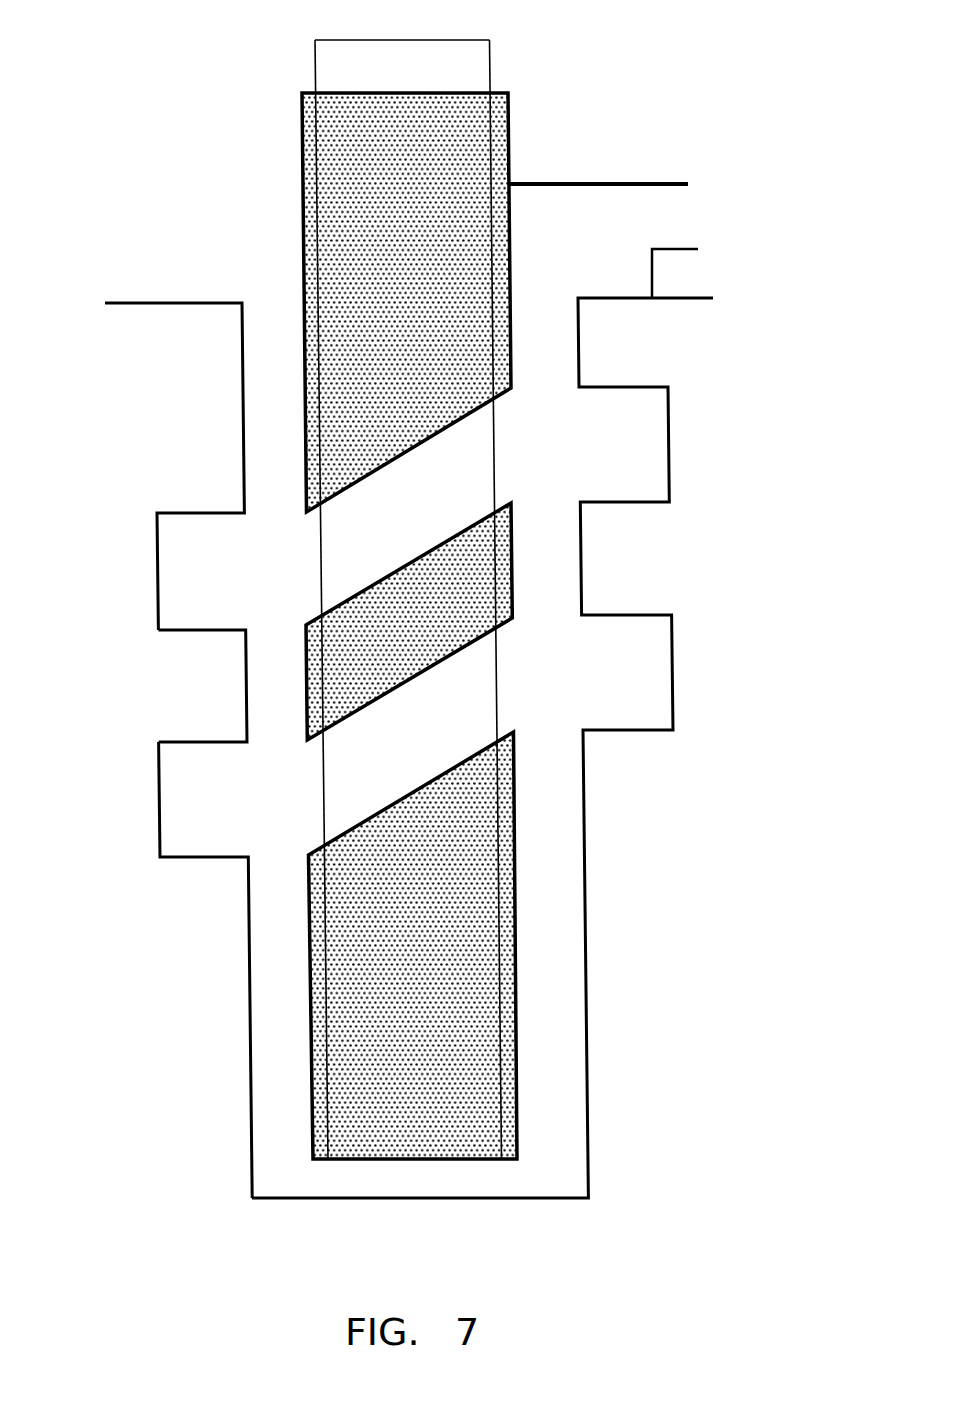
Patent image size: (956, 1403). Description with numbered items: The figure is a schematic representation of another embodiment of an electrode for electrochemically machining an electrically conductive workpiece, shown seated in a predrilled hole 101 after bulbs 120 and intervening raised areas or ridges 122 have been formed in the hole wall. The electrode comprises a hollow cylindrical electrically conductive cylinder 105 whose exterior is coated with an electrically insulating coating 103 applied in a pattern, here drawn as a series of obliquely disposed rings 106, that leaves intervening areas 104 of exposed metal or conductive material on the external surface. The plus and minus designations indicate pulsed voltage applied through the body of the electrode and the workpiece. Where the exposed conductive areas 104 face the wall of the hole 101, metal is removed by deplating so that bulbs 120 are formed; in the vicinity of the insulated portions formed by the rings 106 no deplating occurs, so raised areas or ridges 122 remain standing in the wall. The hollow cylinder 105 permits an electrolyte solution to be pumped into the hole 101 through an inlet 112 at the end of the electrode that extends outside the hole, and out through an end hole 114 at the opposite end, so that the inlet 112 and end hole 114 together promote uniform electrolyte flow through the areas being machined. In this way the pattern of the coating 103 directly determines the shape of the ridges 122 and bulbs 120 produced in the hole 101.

The predrilled hole 101 is at (266, 292).
The electrically insulating coating 103 is at (508, 118).
The intervening areas of exposed conductive material 104 is at (348, 540).
The hollow cylindrical electrically conductive cylinder 105 is at (315, 63).
The rings 106 is at (524, 548).
The inlet 112 is at (412, 40).
The end hole 114 is at (421, 1160).
The bulbs 120 is at (148, 797).
The raised areas or ridges 122 is at (236, 680).